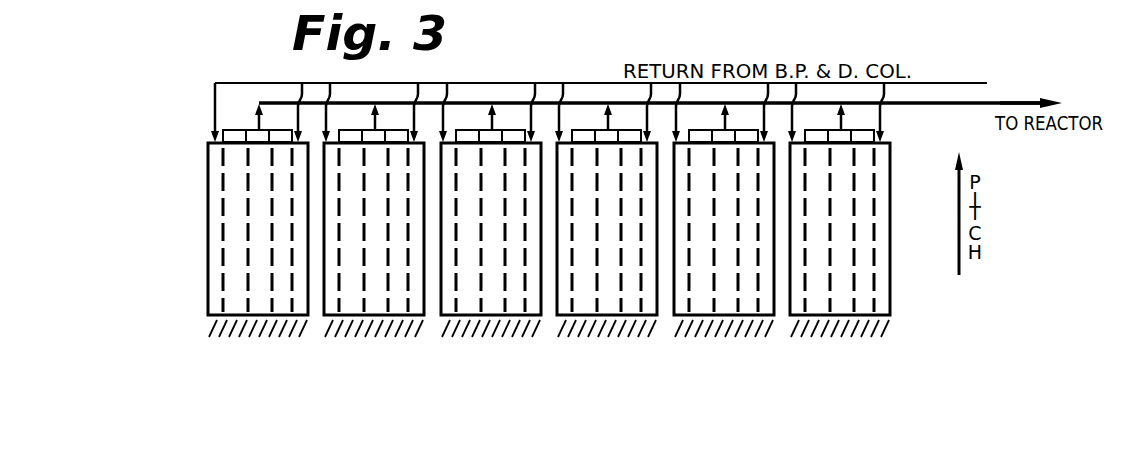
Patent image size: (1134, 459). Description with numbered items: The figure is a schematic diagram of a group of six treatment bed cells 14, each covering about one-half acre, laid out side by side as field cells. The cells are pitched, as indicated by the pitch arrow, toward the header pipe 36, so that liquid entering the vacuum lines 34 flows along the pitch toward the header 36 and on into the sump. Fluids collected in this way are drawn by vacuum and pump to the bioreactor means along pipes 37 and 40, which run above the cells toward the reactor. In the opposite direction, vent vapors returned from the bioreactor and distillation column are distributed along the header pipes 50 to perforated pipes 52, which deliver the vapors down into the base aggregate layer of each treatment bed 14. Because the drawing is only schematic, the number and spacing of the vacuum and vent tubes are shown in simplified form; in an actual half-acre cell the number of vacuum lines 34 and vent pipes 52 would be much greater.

The treatment bed cell 14 is at (325, 310).
The vacuum line 34 is at (240, 130).
The header pipe 36 is at (248, 129).
The pipe to bioreactor 37 is at (1033, 78).
The pipe to bioreactor 40 is at (1015, 103).
The vent header pipe 50 is at (510, 83).
The perforated vent pipe 52 is at (553, 88).